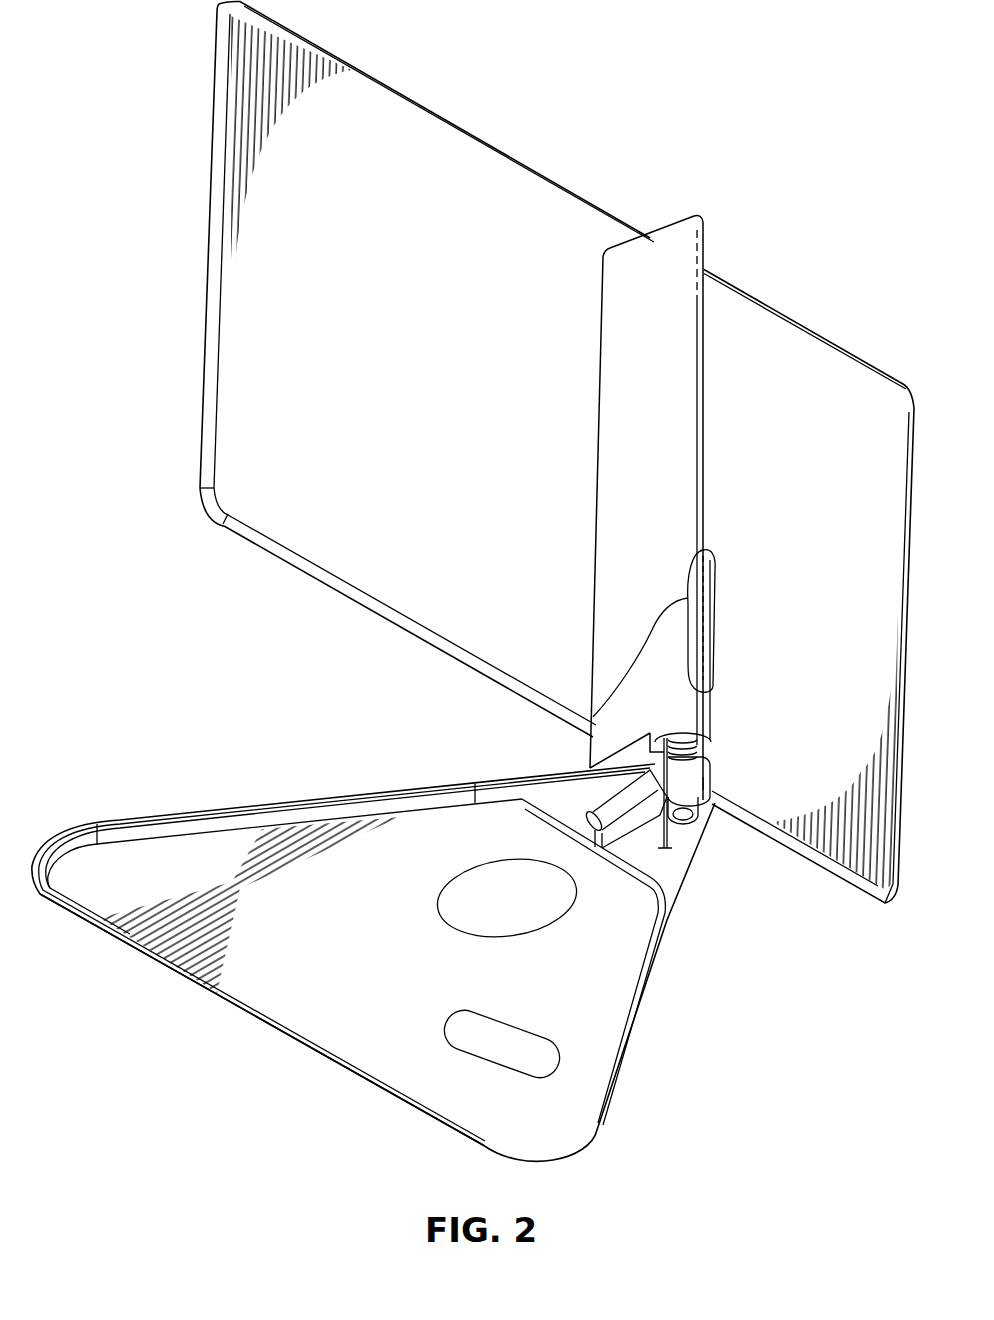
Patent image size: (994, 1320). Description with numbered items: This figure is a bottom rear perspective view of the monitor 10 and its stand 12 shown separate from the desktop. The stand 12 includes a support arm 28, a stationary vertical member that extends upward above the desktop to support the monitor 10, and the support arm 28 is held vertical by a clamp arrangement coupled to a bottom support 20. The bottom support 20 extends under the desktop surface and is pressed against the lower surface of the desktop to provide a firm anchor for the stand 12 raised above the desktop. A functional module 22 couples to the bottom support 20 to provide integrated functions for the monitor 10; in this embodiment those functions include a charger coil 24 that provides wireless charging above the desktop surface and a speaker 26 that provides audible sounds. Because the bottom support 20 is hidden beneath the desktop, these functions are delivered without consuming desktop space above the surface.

The monitor 10 is at (209, 252).
The stand 12 is at (742, 586).
The bottom support 20 is at (127, 817).
The functional module 22 is at (257, 997).
The charger coil 24 is at (463, 1055).
The speaker 26 is at (453, 922).
The support arm 28 is at (705, 411).